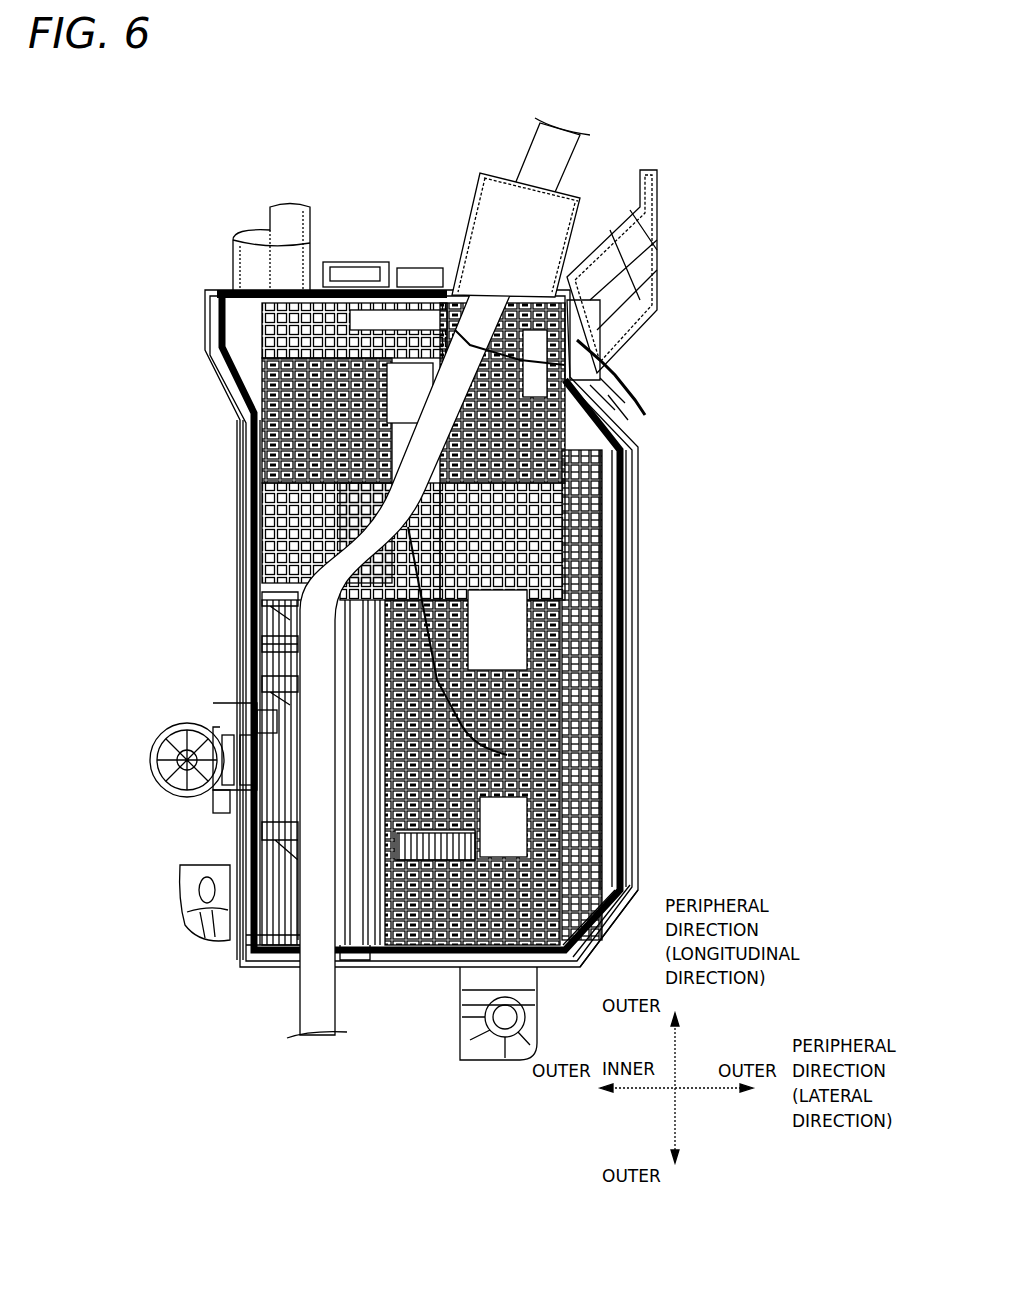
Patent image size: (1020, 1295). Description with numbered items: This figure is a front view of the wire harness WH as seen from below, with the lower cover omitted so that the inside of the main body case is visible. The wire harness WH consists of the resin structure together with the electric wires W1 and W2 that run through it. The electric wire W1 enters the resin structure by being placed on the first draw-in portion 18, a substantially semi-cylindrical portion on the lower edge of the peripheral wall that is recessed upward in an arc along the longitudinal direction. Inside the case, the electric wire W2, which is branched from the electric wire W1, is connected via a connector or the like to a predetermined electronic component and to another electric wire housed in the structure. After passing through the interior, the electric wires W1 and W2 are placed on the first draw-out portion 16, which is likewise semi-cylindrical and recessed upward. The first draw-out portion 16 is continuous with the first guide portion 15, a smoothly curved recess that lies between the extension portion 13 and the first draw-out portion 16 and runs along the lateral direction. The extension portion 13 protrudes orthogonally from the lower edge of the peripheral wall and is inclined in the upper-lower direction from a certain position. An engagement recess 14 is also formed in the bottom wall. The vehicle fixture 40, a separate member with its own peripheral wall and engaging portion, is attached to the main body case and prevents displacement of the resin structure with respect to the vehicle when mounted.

The wire harness WH is at (343, 156).
The first draw-in portion 18 is at (477, 193).
The extension portion 13 is at (285, 683).
The engagement recess 14 is at (380, 925).
The first guide portion 15 is at (285, 646).
The first draw-out portion 16 is at (285, 598).
The vehicle fixture 40 is at (149, 769).
The electric wire W1 is at (458, 362).
The electric wire W2 is at (470, 602).